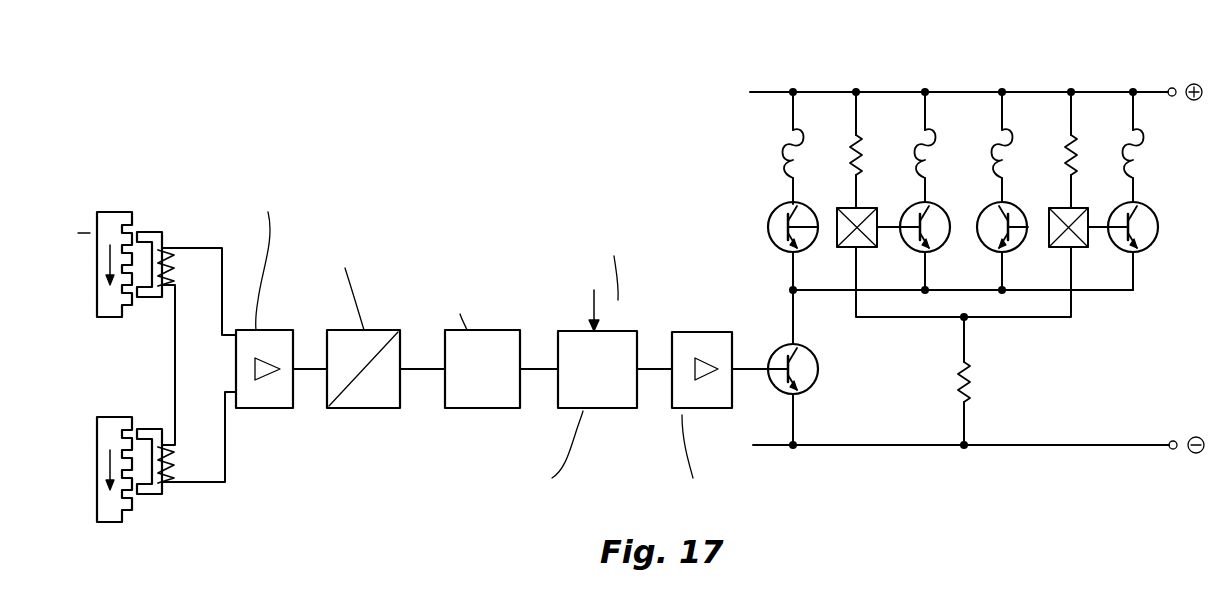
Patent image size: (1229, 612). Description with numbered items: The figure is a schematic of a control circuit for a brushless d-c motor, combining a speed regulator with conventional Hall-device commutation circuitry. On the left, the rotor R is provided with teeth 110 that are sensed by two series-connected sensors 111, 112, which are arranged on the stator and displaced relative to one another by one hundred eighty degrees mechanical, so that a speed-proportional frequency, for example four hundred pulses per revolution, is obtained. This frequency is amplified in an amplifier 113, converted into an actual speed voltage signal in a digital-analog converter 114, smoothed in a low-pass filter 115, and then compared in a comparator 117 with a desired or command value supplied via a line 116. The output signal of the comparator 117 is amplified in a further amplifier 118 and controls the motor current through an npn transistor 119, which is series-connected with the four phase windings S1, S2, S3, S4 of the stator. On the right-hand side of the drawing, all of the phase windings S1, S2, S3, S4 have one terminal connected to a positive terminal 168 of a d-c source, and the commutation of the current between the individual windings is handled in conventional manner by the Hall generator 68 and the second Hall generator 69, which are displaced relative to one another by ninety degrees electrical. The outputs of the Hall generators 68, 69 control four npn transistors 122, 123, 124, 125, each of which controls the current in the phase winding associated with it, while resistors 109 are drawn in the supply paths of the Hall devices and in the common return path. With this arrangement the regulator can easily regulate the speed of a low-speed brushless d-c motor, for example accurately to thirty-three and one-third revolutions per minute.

The teeth 110 is at (106, 213).
The sensor 111 is at (150, 233).
The sensor 112 is at (150, 494).
The amplifier 113 is at (275, 409).
The digital-analog converter 114 is at (364, 409).
The low-pass filter 115 is at (480, 409).
The line 116 is at (597, 305).
The comparator 117 is at (606, 409).
The amplifier 118 is at (700, 409).
The npn transistor 119 is at (818, 369).
The npn transistor 122 is at (770, 224).
The npn transistor 123 is at (940, 216).
The npn transistor 124 is at (987, 238).
The npn transistor 125 is at (1155, 226).
The Hall generator 68 is at (846, 208).
The Hall generator 69 is at (1060, 208).
The resistor 109 is at (862, 157).
The positive terminal 168 is at (1100, 92).
The phase winding S1 is at (786, 150).
The phase winding S2 is at (932, 152).
The phase winding S3 is at (1008, 152).
The phase winding S4 is at (1140, 152).
The rotor R is at (75, 233).